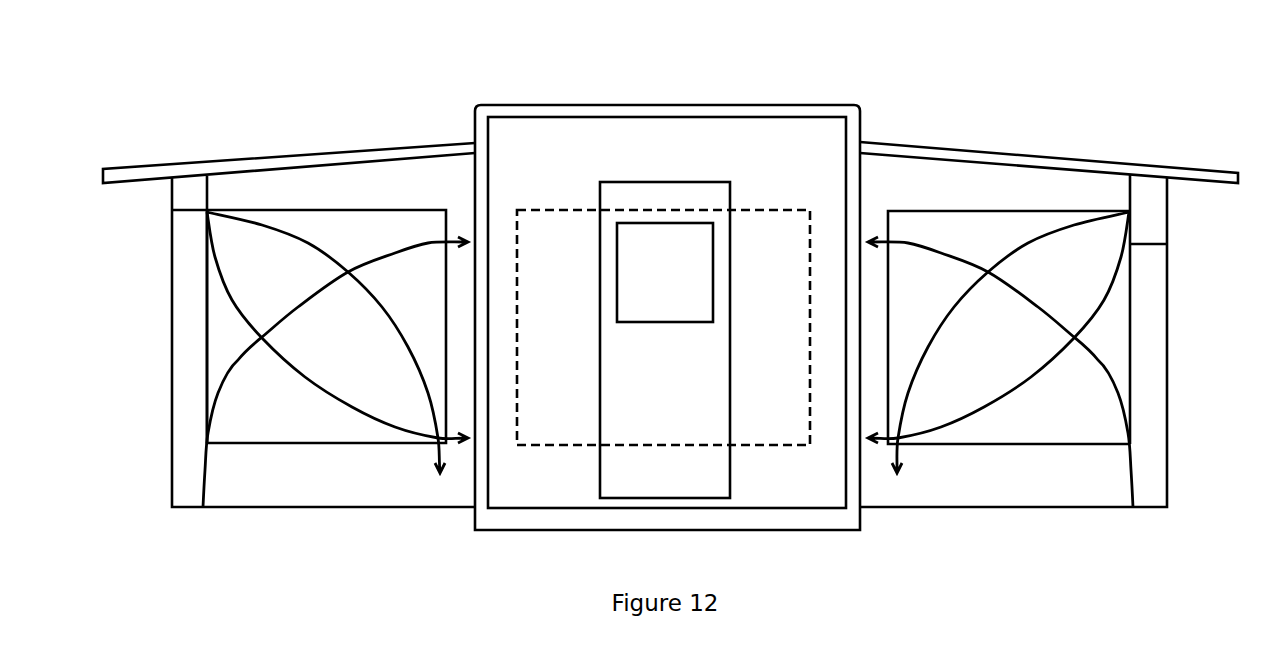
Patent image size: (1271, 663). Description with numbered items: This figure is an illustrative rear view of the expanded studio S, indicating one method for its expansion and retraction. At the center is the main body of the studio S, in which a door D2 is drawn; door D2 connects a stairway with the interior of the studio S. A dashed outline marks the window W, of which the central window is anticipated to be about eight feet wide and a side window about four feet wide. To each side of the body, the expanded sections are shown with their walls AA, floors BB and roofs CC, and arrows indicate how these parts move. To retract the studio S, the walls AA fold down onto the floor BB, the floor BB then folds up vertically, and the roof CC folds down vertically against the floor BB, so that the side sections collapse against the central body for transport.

The studio S is at (943, 102).
The door D2 is at (634, 171).
The window W is at (772, 459).
The walls AA is at (667, 309).
The floor BB is at (669, 362).
The roof CC is at (670, 154).